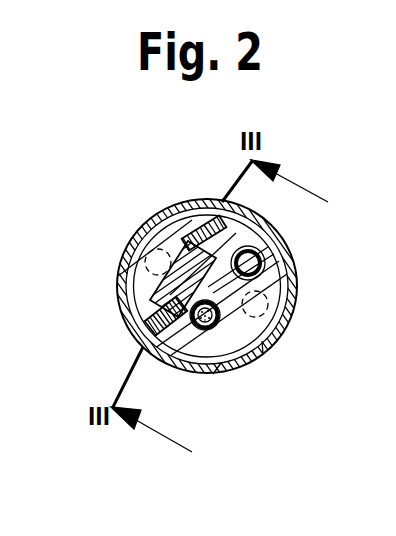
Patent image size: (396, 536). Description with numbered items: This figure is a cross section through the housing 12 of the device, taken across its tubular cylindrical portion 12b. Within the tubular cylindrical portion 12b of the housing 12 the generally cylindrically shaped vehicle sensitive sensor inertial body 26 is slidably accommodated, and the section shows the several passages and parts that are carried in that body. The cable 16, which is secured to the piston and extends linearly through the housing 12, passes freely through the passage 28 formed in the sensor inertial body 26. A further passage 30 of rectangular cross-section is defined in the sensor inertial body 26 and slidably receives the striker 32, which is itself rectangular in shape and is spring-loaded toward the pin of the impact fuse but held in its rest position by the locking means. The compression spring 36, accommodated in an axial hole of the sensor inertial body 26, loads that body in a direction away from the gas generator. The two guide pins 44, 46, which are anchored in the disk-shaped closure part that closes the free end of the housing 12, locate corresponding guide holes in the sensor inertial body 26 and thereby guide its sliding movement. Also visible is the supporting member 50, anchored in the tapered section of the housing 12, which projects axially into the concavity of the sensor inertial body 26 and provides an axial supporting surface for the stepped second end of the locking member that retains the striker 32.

The housing 12 is at (302, 277).
The tubular cylindrical portion 12b is at (268, 304).
The cable 16 is at (200, 330).
The vehicle sensitive sensor inertial body 26 is at (118, 276).
The passage 28 is at (222, 363).
The further passage 30 is at (191, 216).
The striker 32 is at (218, 238).
The compression spring 36 is at (265, 262).
The guide pin 44 is at (131, 223).
The guide pin 46 is at (277, 352).
The supporting member 50 is at (126, 319).